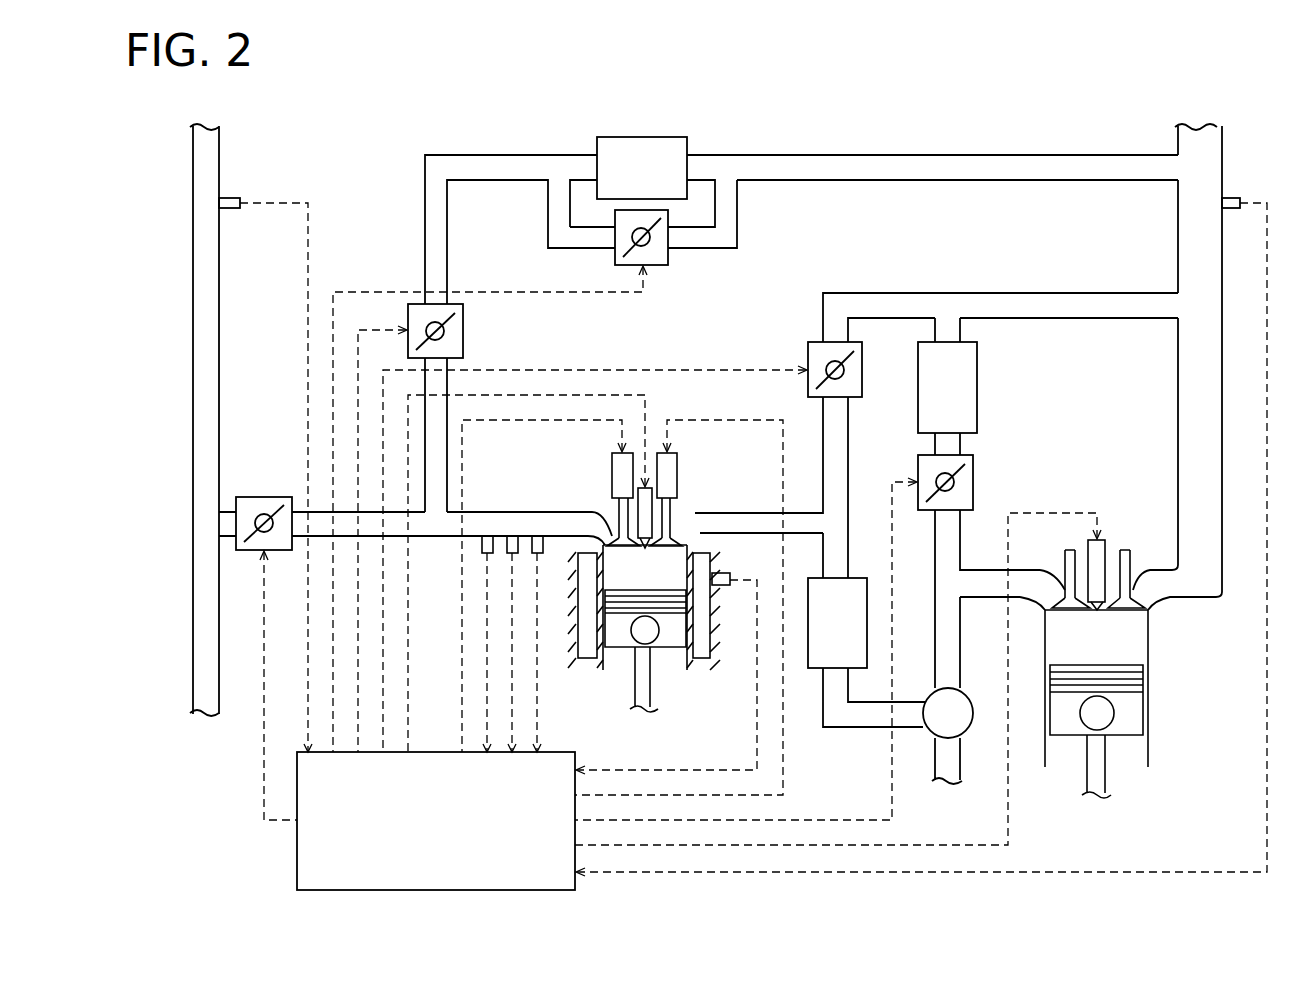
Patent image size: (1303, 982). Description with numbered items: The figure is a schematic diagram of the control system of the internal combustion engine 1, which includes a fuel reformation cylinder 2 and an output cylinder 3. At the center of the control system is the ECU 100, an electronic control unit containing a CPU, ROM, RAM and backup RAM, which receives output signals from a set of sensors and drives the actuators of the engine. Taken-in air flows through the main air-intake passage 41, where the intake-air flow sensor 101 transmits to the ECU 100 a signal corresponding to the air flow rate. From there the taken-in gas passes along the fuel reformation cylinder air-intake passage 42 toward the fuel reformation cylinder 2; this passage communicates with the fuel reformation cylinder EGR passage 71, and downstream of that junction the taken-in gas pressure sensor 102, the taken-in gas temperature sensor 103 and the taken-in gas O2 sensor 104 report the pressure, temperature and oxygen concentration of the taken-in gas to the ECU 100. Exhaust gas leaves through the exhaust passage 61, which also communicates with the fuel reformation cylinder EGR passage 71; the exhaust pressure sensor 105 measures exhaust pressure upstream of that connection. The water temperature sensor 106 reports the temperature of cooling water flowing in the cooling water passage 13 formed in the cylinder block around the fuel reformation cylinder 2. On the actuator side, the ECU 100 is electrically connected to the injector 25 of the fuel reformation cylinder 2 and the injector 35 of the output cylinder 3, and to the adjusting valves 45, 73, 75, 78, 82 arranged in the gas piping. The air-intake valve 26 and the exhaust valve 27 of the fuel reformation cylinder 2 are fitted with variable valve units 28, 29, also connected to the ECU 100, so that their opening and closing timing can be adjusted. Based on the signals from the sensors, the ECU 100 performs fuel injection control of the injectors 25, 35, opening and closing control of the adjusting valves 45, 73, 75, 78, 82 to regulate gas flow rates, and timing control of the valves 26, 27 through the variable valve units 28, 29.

The internal combustion engine 1 is at (342, 125).
The fuel reformation cylinder 2 is at (676, 680).
The output cylinder 3 is at (1160, 714).
The cooling water passage 13 is at (701, 630).
The injector 25 is at (650, 495).
The air-intake valve 26 is at (616, 510).
The exhaust valve 27 is at (674, 510).
The variable valve unit 28 is at (614, 460).
The variable valve unit 29 is at (676, 460).
The injector 35 is at (1104, 549).
The main air-intake passage 41 is at (213, 327).
The fuel reformation cylinder air-intake passage 42 is at (436, 528).
The adjusting valve 45 is at (264, 496).
The exhaust passage 61 is at (1184, 393).
The fuel reformation cylinder EGR passage 71 is at (424, 230).
The adjusting valve 73 is at (464, 336).
The adjusting valve 75 is at (670, 258).
The adjusting valve 78 is at (972, 472).
The adjusting valve 82 is at (804, 352).
The ECU 100 is at (296, 862).
The intake-air flow sensor 101 is at (232, 196).
The taken-in gas pressure sensor 102 is at (487, 536).
The taken-in gas temperature sensor 103 is at (513, 536).
The taken-in gas O2 sensor 104 is at (537, 536).
The exhaust pressure sensor 105 is at (1231, 198).
The water temperature sensor 106 is at (750, 566).